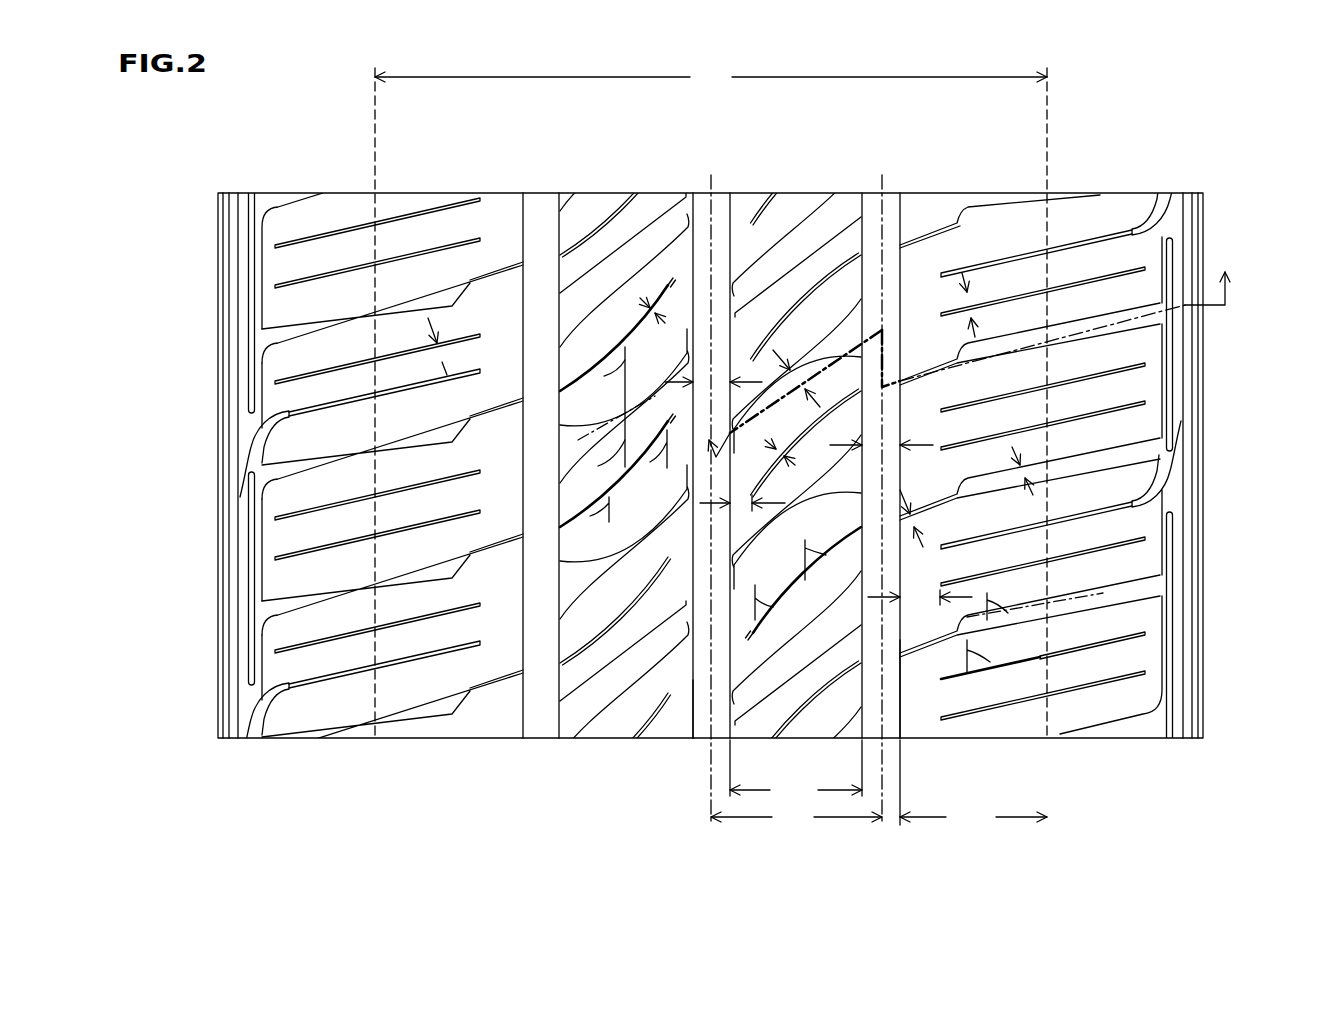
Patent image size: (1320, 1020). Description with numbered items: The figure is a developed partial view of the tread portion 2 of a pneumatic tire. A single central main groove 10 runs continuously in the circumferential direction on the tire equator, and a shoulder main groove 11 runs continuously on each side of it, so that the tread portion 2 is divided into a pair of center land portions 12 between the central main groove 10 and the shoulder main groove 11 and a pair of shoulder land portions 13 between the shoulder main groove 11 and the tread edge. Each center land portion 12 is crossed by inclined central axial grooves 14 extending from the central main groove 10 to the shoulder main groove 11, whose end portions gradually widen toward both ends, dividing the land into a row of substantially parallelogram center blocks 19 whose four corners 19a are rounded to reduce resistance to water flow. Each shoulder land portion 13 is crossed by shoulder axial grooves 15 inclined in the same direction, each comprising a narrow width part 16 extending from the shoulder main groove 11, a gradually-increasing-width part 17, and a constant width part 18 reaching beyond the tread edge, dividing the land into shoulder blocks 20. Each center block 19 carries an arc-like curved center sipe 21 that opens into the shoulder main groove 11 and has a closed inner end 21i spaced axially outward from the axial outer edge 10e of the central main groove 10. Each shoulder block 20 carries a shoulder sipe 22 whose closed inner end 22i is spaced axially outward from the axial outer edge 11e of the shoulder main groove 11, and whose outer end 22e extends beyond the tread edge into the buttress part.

The tread portion 2 is at (505, 188).
The central main groove 10 is at (721, 225).
The axial outer edge of the central main groove 10e is at (693, 700).
The shoulder main groove 11 is at (533, 240).
The axial outer edge of the shoulder main groove 11e is at (900, 653).
The center land portion 12 is at (655, 225).
The shoulder land portion 13 is at (460, 228).
The central axial groove 14 is at (625, 275).
The shoulder axial groove 15 is at (419, 303).
The narrow width part 16 is at (268, 633).
The gradually-increasing-width part 17 is at (455, 572).
The constant width part 18 is at (393, 580).
The center block 19 is at (710, 459).
The corner of the center block 19a is at (557, 657).
The shoulder block 20 is at (710, 459).
The center sipe 21 is at (578, 235).
The inner end of the center sipe 21i is at (680, 640).
The shoulder sipe 22 is at (1160, 606).
The outer end of the shoulder sipe 22e is at (1147, 538).
The inner end of the shoulder sipe 22i is at (938, 278).